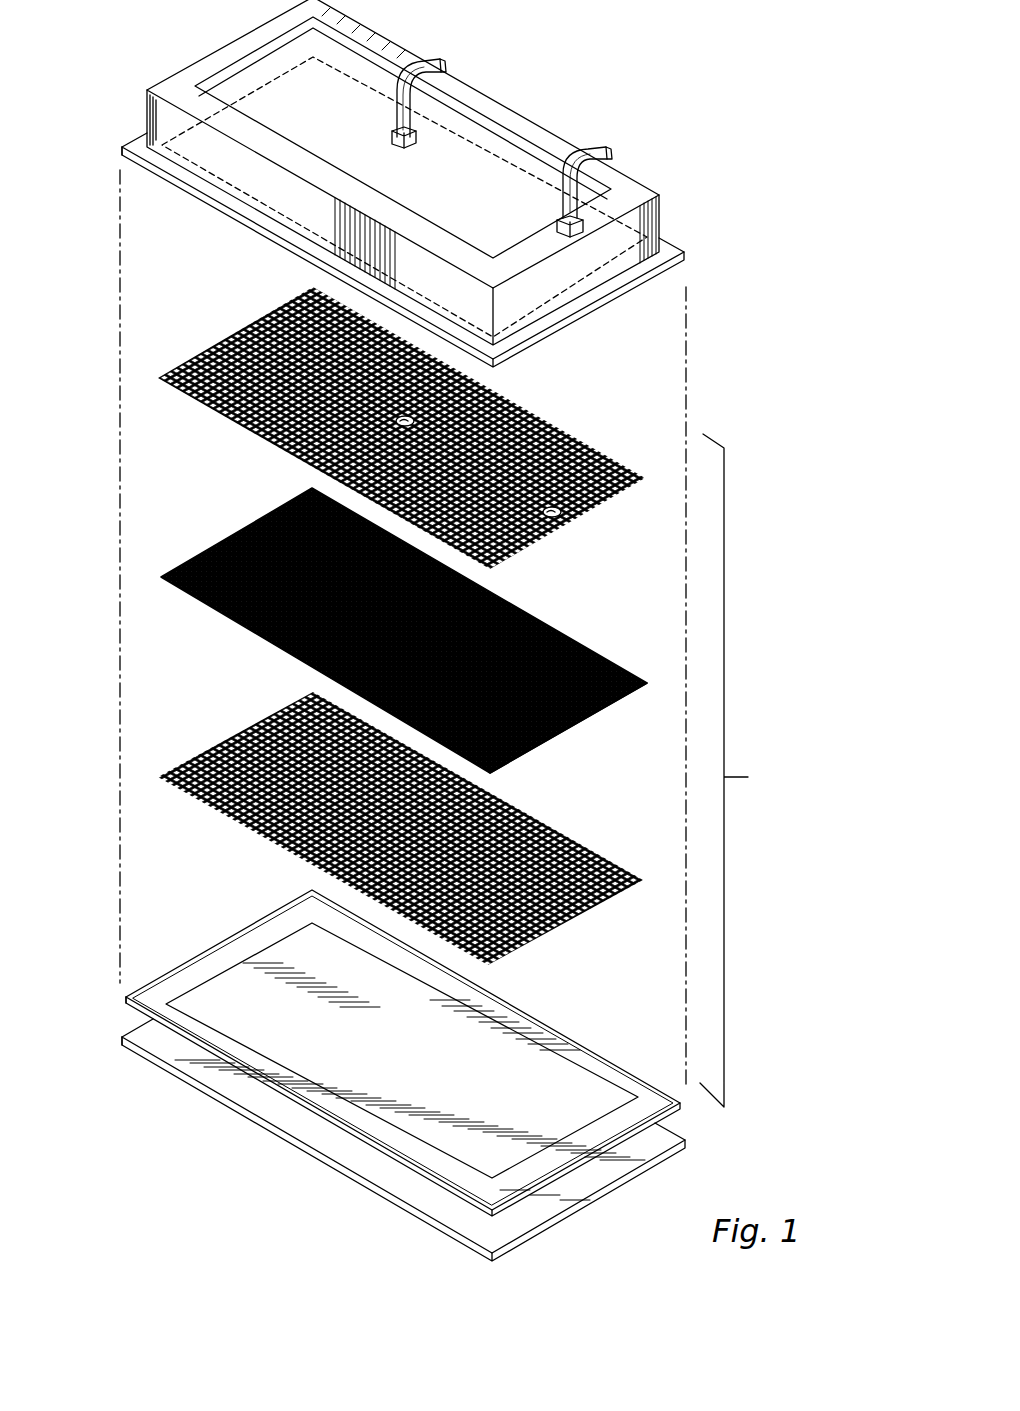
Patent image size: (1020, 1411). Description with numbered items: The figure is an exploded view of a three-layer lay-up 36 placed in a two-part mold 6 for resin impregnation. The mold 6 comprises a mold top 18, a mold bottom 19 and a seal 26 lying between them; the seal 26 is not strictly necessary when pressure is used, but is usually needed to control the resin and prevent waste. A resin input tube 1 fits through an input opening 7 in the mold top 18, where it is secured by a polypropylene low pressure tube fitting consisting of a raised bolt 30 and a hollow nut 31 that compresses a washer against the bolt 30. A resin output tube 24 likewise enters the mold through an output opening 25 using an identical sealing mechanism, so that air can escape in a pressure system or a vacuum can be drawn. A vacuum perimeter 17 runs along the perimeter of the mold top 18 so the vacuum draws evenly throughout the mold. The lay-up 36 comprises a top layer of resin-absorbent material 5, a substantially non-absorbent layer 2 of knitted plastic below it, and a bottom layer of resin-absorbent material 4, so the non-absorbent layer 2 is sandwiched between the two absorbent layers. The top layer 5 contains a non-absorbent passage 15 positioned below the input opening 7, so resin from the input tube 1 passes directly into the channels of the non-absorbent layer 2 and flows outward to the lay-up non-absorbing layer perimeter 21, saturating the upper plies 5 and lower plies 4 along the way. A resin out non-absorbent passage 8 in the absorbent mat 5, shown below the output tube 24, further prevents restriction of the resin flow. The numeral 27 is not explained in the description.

The resin input tube 1 is at (440, 50).
The non-absorbent layer 2 is at (612, 660).
The bottom layer of resin-absorbent material 4 is at (595, 858).
The top layer of resin-absorbent material 5 is at (592, 438).
The mold 6 is at (120, 146).
The input opening 7 is at (405, 112).
The resin out non-absorbent passage 8 is at (561, 514).
The non-absorbent passage 15 is at (414, 422).
The vacuum perimeter 17 is at (235, 122).
The mold top 18 is at (669, 226).
The mold bottom 19 is at (147, 1056).
The lay-up non-absorbing layer perimeter 21 is at (495, 772).
The resin output tube 24 is at (612, 150).
The output opening 25 is at (598, 212).
The seal 26 is at (598, 1044).
The rim 27 is at (268, 56).
The raised bolt 30 is at (619, 318).
The hollow nut 31 is at (421, 156).
The lay-up 36 is at (747, 770).